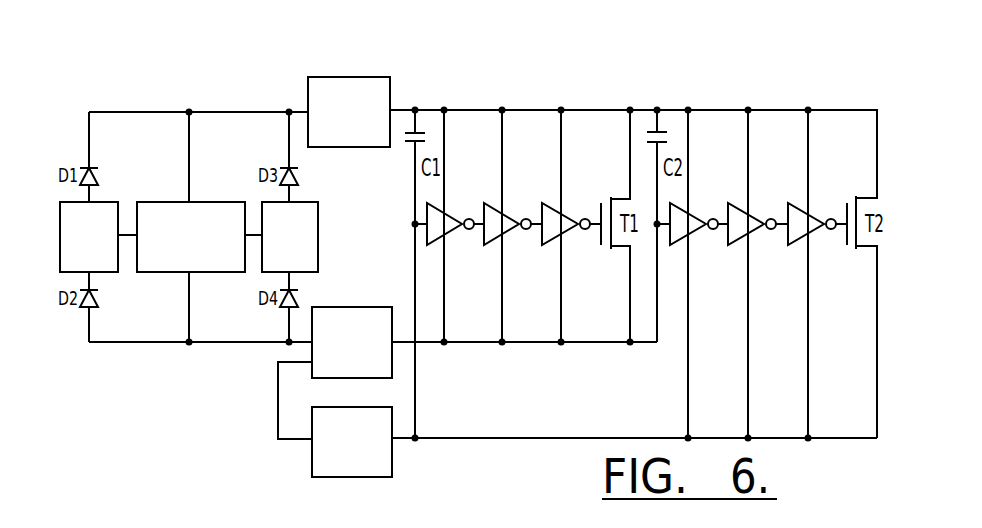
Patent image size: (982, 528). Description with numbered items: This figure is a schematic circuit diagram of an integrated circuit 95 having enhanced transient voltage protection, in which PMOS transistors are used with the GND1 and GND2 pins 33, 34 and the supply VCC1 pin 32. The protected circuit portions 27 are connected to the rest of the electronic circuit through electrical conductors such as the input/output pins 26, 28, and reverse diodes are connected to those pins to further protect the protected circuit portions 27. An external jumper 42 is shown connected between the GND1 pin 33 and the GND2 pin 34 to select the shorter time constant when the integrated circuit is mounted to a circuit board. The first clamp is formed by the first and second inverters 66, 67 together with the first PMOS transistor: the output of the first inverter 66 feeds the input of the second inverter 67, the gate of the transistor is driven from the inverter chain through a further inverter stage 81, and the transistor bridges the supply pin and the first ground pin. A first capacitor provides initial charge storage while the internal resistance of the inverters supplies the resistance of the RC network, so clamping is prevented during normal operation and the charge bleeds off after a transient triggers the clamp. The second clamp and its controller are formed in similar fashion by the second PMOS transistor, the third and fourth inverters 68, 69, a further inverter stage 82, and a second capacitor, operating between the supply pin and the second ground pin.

The input/output pin 26 is at (264, 253).
The protected circuit portions 27 is at (202, 204).
The input/output pin 28 is at (115, 216).
The supply pin VCC1 32 is at (320, 106).
The GND1 pin 33 is at (354, 321).
The GND2 pin 34 is at (367, 464).
The external jumper 42 is at (272, 400).
The first inverter 66 is at (462, 209).
The second inverter 67 is at (519, 209).
The third inverter 68 is at (705, 209).
The fourth inverter 69 is at (763, 209).
The inverter 81 is at (577, 209).
The inverter 82 is at (822, 209).
The integrated circuit 95 is at (606, 75).